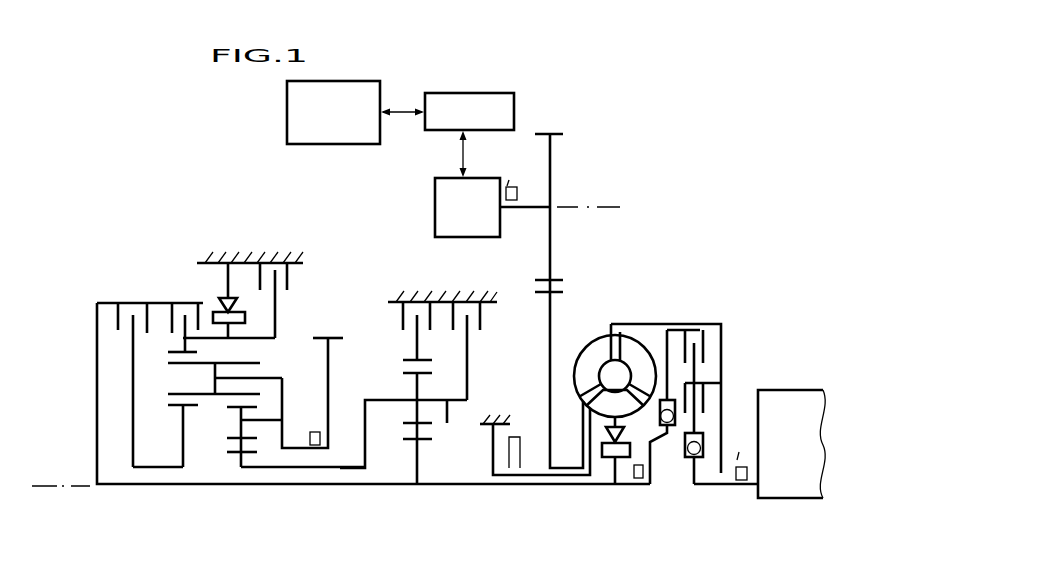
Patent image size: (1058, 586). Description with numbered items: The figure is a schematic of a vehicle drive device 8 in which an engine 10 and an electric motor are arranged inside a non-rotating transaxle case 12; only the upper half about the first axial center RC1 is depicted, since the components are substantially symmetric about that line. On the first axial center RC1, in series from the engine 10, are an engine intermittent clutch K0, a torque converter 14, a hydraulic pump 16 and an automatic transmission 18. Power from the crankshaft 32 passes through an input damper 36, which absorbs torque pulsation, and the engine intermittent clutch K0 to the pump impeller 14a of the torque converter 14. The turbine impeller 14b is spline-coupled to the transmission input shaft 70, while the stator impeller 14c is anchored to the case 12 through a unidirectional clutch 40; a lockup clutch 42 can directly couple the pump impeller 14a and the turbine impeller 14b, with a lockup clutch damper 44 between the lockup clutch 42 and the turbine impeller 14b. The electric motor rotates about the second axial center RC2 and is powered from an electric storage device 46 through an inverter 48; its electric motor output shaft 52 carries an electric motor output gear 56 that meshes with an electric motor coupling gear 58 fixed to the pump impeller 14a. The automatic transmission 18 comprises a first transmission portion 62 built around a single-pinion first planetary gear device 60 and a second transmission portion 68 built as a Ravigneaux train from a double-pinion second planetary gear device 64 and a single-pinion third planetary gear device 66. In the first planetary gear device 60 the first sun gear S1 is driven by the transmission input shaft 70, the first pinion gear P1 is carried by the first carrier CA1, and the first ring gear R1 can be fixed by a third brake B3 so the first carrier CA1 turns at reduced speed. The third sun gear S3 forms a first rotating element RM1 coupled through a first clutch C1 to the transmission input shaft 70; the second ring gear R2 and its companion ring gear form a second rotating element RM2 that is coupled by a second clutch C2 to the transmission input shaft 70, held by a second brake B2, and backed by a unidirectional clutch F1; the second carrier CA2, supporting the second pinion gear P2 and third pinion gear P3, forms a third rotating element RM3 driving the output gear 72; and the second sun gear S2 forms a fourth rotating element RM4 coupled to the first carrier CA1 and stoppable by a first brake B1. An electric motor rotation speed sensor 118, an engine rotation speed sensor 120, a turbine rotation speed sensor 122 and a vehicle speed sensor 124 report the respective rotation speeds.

The vehicle drive device 8 is at (778, 110).
The engine 10 is at (777, 392).
The transaxle case 12 is at (247, 261).
The torque converter 14 is at (630, 297).
The pump impeller 14a is at (600, 347).
The turbine impeller 14b is at (629, 345).
The stator impeller 14c is at (600, 410).
The hydraulic pump 16 is at (518, 440).
The automatic transmission 18 is at (128, 148).
The crankshaft 32 is at (733, 486).
The input damper 36 is at (703, 453).
The unidirectional clutch 40 is at (621, 458).
The lockup clutch 42 is at (706, 348).
The lockup clutch damper 44 is at (670, 428).
The electric storage device 46 is at (371, 82).
The inverter 48 is at (511, 93).
The electric motor output shaft 52 is at (525, 209).
The electric motor output gear 56 is at (553, 257).
The electric motor coupling gear 58 is at (549, 366).
The first planetary gear device 60 is at (418, 504).
The first transmission portion 62 is at (405, 262).
The second planetary gear device 64 is at (244, 498).
The third planetary gear device 66 is at (188, 497).
The second transmission portion 68 is at (198, 212).
The transmission input shaft 70 is at (478, 486).
The output gear 72 is at (341, 339).
The electric motor rotation speed sensor 118 is at (518, 197).
The engine rotation speed sensor 120 is at (741, 467).
The turbine rotation speed sensor 122 is at (639, 480).
The vehicle speed sensor 124 is at (309, 438).
The first brake B1 is at (482, 318).
The second brake B2 is at (290, 275).
The third brake B3 is at (401, 320).
The first clutch C1 is at (118, 329).
The second clutch C2 is at (207, 312).
The first carrier CA1 is at (459, 423).
The second carrier CA2 is at (279, 378).
The unidirectional clutch F1 is at (224, 299).
The engine intermittent clutch K0 is at (705, 397).
The first pinion gear P1 is at (405, 373).
The second pinion gear P2 is at (232, 410).
The third pinion gear P3 is at (179, 366).
The first ring gear R1 is at (425, 352).
The second ring gear R2 is at (171, 350).
The first axial center RC1 is at (57, 489).
The second axial center RC2 is at (605, 208).
The first rotating element RM1 is at (145, 470).
The second rotating element RM2 is at (218, 341).
The third rotating element RM3 is at (284, 383).
The fourth rotating element RM4 is at (309, 469).
The first sun gear S1 is at (405, 440).
The second sun gear S2 is at (232, 454).
The third sun gear S3 is at (175, 409).